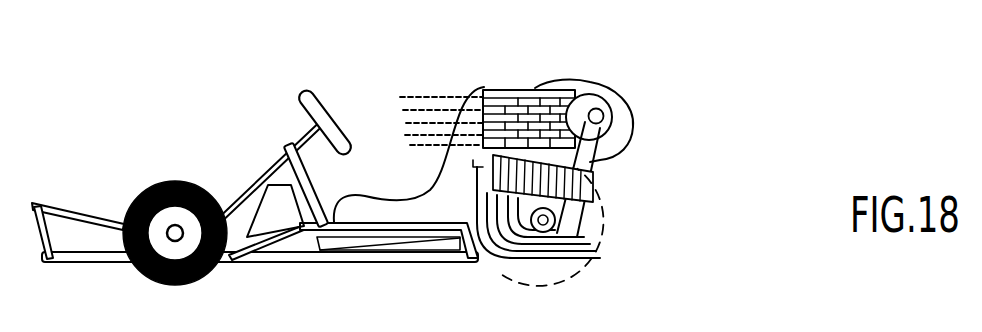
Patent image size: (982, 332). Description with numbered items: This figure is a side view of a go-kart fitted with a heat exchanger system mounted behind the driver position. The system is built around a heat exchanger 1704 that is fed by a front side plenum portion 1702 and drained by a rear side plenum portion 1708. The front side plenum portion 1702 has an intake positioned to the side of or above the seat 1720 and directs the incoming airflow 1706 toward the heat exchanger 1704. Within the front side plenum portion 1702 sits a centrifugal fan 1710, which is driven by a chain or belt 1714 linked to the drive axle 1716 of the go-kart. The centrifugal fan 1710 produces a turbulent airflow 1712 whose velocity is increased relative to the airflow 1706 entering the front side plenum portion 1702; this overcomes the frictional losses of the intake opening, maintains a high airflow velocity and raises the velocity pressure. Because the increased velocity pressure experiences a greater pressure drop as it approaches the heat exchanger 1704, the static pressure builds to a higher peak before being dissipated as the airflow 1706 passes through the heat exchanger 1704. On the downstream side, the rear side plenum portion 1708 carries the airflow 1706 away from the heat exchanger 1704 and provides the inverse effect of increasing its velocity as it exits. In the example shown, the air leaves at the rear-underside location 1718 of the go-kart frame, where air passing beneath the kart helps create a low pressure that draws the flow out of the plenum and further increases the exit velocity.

The front side plenum portion 1702 is at (508, 90).
The heat exchanger 1704 is at (480, 157).
The airflow 1706 is at (528, 93).
The rear side plenum portion 1708 is at (495, 257).
The centrifugal fan 1710 is at (610, 97).
The turbulent airflow 1712 is at (605, 158).
The chain or belt 1714 is at (592, 170).
The drive axle 1716 is at (560, 218).
The rear-underside location 1718 is at (620, 262).
The seat 1720 is at (387, 213).